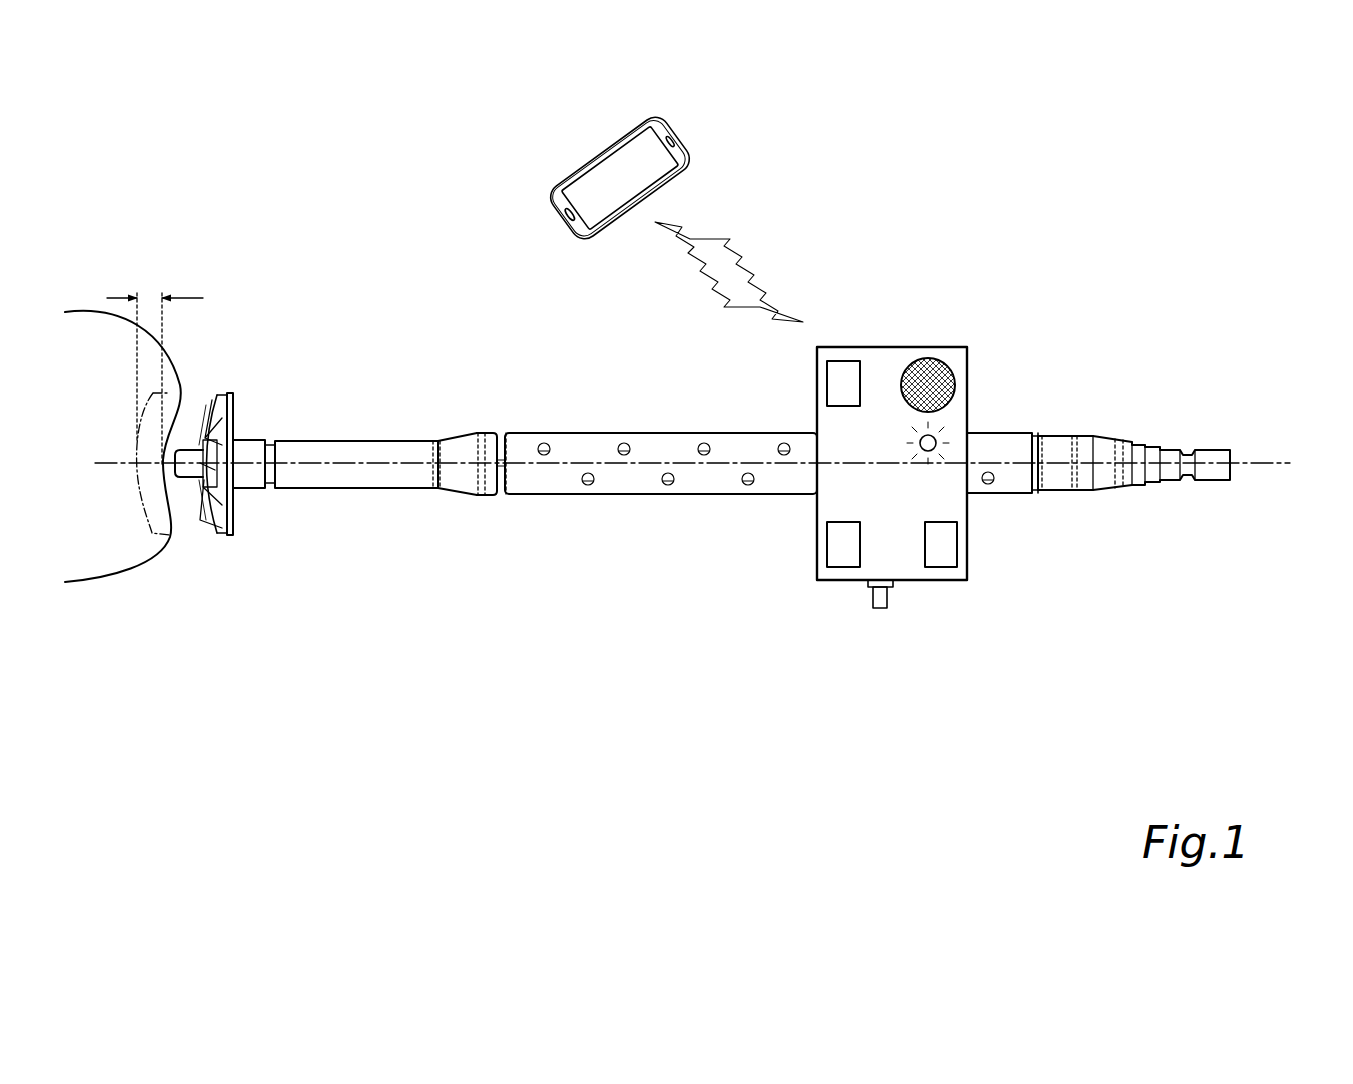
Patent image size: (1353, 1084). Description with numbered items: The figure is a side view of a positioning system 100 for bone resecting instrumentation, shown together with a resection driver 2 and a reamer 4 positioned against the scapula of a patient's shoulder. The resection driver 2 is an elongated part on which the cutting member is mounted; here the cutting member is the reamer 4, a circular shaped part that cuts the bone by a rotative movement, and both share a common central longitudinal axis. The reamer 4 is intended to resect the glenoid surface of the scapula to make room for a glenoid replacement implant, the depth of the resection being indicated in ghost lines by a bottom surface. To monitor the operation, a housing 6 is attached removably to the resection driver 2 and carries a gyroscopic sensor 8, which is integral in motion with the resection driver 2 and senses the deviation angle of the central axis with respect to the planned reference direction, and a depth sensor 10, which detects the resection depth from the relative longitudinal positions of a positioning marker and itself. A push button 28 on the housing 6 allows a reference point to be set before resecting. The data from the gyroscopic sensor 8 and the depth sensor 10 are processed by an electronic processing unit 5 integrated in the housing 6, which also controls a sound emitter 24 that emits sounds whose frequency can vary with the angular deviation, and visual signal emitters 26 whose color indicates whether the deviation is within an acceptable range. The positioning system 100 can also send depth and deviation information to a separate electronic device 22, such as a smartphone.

The resection driver 2 is at (378, 452).
The reamer 4 is at (223, 393).
The electronic processing unit 5 is at (957, 545).
The housing 6 is at (898, 347).
The gyroscopic sensor 8 is at (849, 368).
The depth sensor 10 is at (830, 545).
The separate electronic device 22 is at (618, 178).
The sound emitter 24 is at (948, 378).
The visual signal emitters 26 is at (935, 438).
The push button 28 is at (886, 600).
The positioning system 100 is at (992, 311).